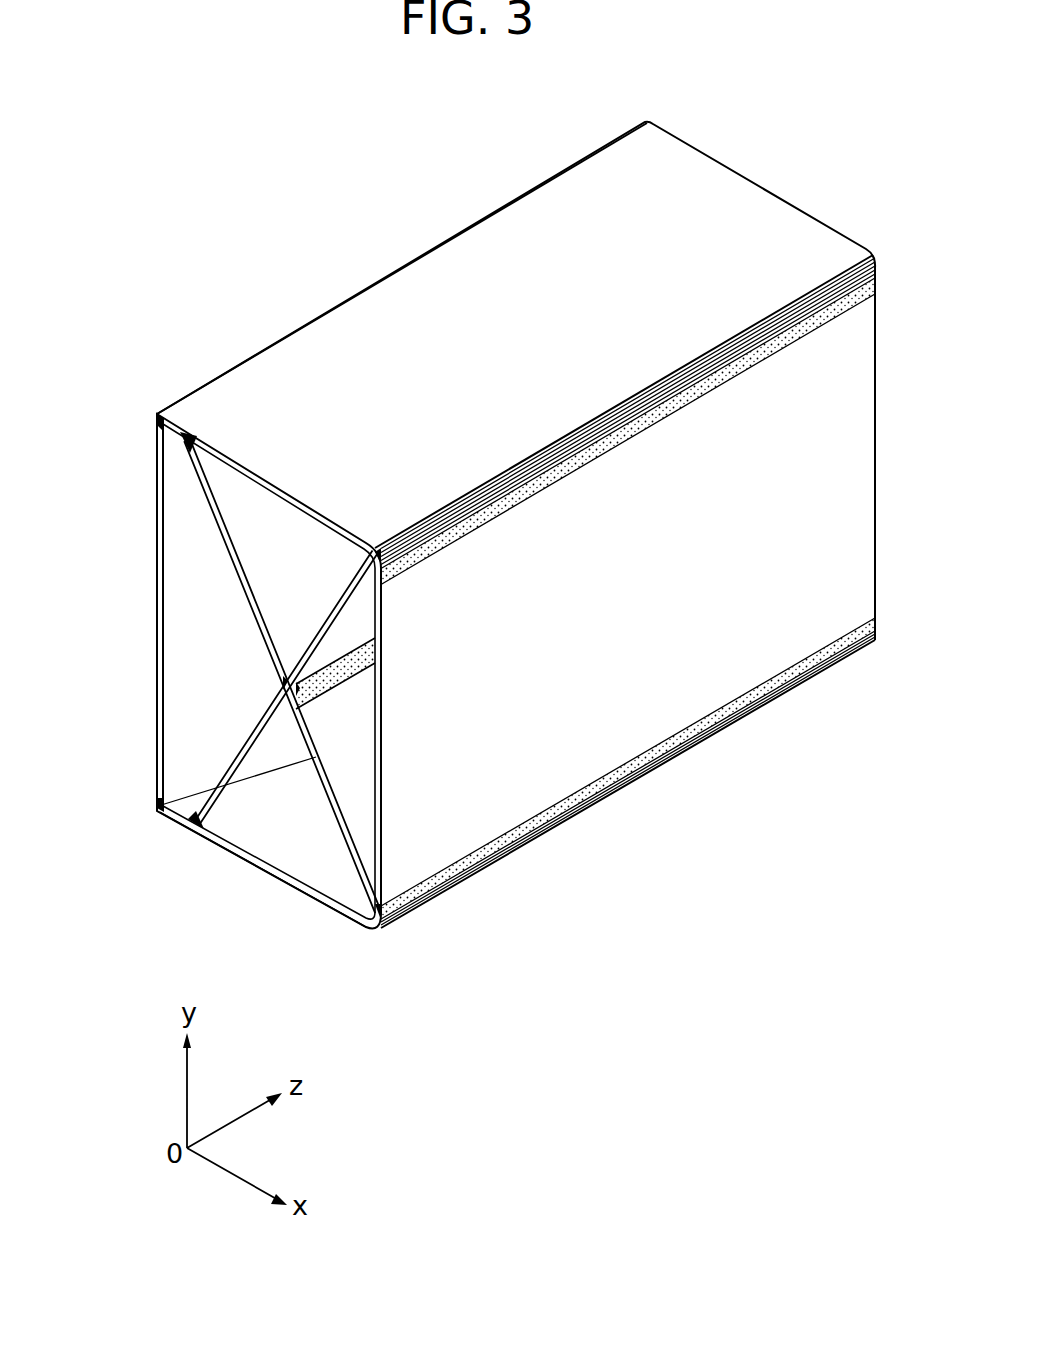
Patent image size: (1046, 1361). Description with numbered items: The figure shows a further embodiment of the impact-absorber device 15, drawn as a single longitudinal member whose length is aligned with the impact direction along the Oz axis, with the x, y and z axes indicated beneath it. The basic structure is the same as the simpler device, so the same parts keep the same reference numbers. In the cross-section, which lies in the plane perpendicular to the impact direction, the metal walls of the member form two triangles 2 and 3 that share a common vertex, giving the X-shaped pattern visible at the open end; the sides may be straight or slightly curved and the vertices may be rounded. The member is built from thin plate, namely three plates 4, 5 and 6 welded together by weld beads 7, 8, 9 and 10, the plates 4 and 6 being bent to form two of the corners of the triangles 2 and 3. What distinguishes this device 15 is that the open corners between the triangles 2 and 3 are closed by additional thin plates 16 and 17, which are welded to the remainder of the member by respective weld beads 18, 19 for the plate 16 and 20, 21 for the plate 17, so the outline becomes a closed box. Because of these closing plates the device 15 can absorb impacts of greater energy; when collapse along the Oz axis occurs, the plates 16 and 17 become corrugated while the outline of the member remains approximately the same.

The triangle 2 is at (303, 575).
The triangle 3 is at (286, 826).
The plate 4 is at (245, 385).
The plate 5 is at (247, 594).
The plate 6 is at (300, 890).
The weld bead 7 is at (189, 446).
The weld bead 8 is at (282, 689).
The weld bead 9 is at (348, 670).
The weld bead 10 is at (195, 825).
The device 15 is at (504, 196).
The thin plate 16 is at (160, 540).
The thin plate 17 is at (680, 702).
The weld bead 18 is at (155, 422).
The weld bead 19 is at (157, 806).
The weld bead 20 is at (468, 528).
The weld bead 21 is at (474, 846).